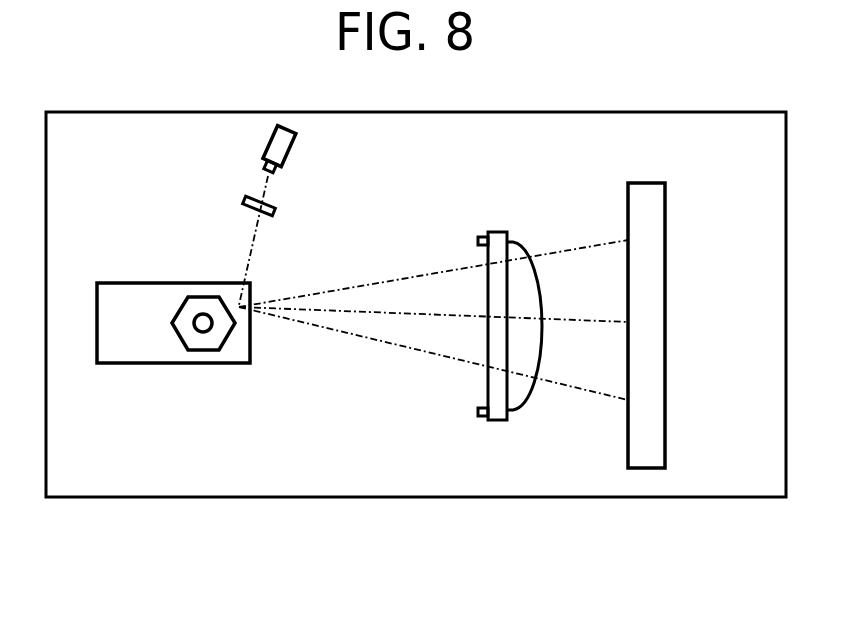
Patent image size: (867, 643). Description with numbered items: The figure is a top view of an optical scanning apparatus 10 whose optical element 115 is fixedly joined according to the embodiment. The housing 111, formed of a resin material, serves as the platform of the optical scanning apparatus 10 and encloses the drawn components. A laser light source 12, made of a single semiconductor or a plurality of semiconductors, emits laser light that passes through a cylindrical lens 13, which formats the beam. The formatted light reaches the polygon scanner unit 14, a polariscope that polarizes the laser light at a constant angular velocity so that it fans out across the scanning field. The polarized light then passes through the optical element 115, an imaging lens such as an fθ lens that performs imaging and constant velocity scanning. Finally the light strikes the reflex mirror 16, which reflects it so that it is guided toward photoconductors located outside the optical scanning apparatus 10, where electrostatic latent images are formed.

The optical scanning apparatus 10 is at (407, 522).
The laser light source 12 is at (294, 150).
The cylindrical lens 13 is at (277, 209).
The polygon scanner unit 14 is at (132, 364).
The reflex mirror 16 is at (665, 322).
The housing 111 is at (87, 497).
The optical element 115 is at (488, 387).